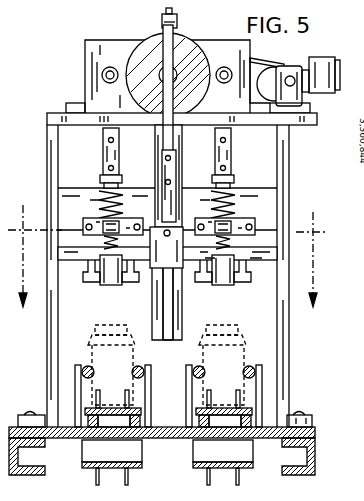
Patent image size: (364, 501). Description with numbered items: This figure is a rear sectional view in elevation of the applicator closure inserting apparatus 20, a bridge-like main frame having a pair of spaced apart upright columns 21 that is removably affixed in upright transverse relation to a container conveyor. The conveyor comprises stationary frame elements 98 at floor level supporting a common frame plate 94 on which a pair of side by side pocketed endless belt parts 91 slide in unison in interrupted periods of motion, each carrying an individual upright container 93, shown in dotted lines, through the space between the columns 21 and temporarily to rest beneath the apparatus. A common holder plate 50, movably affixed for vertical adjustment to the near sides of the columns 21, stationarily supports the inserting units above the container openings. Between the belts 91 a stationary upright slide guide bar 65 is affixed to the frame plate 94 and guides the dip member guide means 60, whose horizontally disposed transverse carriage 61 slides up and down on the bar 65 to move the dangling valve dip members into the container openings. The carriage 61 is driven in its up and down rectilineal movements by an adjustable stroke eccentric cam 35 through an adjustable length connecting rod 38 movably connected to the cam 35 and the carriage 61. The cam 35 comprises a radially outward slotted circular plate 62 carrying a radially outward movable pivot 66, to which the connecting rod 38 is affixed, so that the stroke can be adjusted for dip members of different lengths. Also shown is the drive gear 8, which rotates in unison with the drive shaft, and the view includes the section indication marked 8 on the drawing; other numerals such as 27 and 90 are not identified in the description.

The circular drive gear 8 is at (167, 243).
The applicator closure inserting apparatus 20 is at (47, 118).
The upright columns 21 is at (50, 143).
The support block 27 is at (117, 40).
The adjustable stroke eccentric cam 35 is at (186, 36).
The adjustable length connecting rod 38 is at (178, 162).
The common holder plate 50 is at (262, 190).
The dip member guide means 60 is at (180, 268).
The transverse carriage 61 is at (223, 262).
The slotted circular plate 62 is at (150, 98).
The slide guide bar 65 is at (182, 313).
The radially outward movable pivot 66 is at (160, 24).
The coil unit 90 is at (236, 395).
The endless belt parts 91 is at (119, 442).
The container 93 is at (96, 333).
The common frame plate 94 is at (315, 433).
The stationary frame elements 98 is at (307, 462).